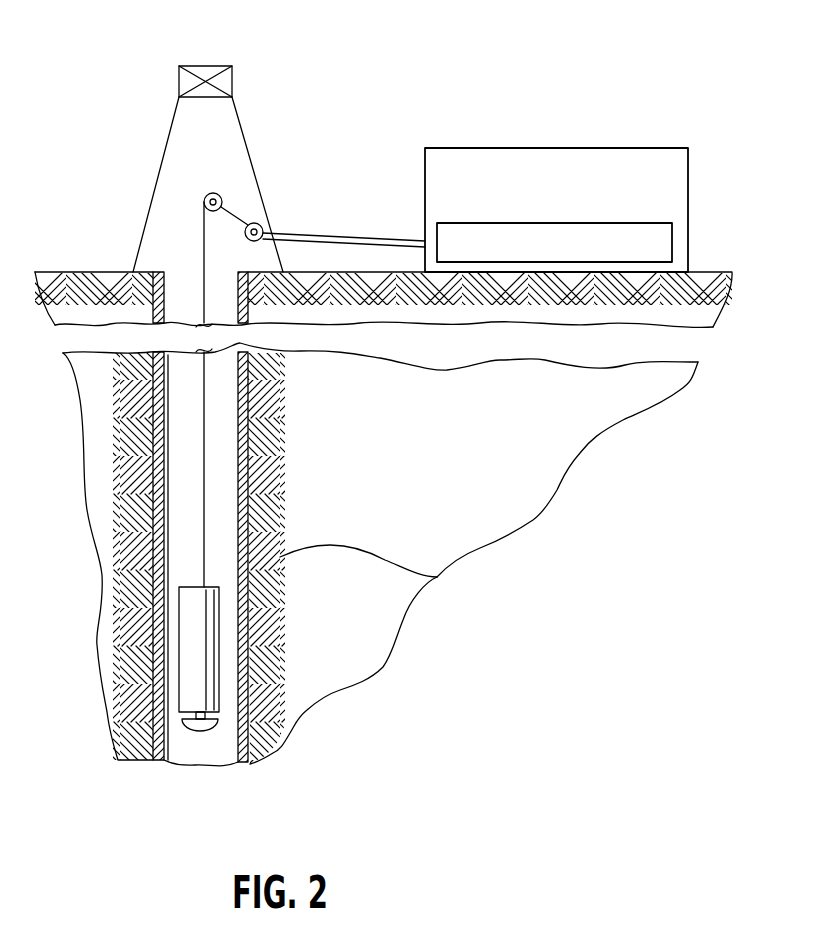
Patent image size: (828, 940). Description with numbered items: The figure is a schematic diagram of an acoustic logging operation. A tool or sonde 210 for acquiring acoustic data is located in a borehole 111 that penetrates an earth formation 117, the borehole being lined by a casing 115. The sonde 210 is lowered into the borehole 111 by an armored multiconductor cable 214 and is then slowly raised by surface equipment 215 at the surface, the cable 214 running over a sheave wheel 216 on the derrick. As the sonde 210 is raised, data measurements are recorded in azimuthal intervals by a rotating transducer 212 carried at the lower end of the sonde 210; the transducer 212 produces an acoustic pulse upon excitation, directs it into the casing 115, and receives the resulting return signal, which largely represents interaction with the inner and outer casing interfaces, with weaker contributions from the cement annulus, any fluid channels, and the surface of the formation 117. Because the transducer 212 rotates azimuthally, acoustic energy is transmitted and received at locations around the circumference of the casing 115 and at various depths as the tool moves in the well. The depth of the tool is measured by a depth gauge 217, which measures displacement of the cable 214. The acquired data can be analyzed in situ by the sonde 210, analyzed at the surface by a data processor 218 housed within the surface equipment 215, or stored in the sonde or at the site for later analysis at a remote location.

The borehole 111 is at (232, 432).
The casing 115 is at (245, 487).
The earth formation 117 is at (437, 577).
The sonde 210 is at (207, 630).
The rotating transducer 212 is at (200, 731).
The armored multiconductor cable 214 is at (204, 240).
The surface equipment 215 is at (607, 158).
The sheave wheel 216 is at (212, 193).
The depth gauge 217 is at (262, 226).
The data processor 218 is at (653, 225).